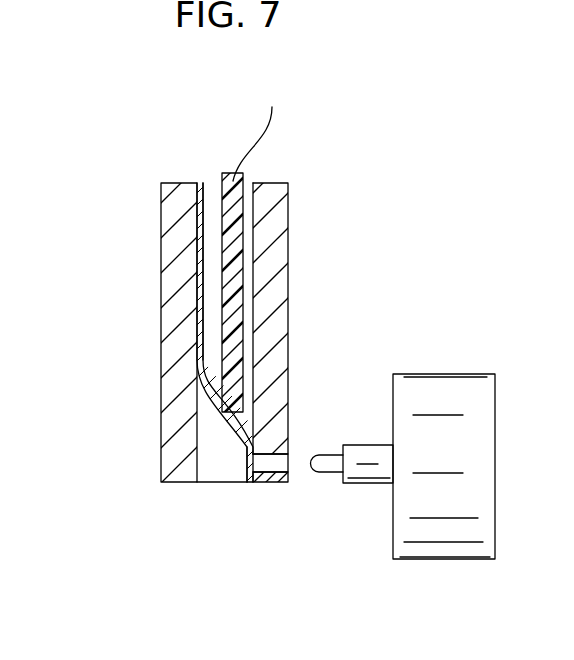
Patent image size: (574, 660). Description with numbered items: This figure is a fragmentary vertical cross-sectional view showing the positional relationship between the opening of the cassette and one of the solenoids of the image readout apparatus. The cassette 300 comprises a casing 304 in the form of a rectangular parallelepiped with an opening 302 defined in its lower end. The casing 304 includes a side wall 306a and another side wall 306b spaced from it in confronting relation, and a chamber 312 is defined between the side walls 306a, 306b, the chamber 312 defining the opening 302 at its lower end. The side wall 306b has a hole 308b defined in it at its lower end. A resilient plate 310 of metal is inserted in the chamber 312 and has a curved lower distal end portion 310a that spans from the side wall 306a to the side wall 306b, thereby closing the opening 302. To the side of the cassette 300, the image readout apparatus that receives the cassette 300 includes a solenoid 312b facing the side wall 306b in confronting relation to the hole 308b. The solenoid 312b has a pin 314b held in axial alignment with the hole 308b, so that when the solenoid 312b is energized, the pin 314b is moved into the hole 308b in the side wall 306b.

The cassette 300 is at (216, 339).
The opening 302 is at (222, 470).
The casing 304 is at (168, 227).
The side wall 306a is at (180, 308).
The side wall 306b is at (283, 240).
The hole 308b is at (273, 466).
The resilient plate 310 is at (222, 413).
The curved lower distal end portion 310a is at (249, 463).
The chamber 312 is at (203, 278).
The solenoid 312b is at (458, 400).
The pin 314b is at (326, 460).